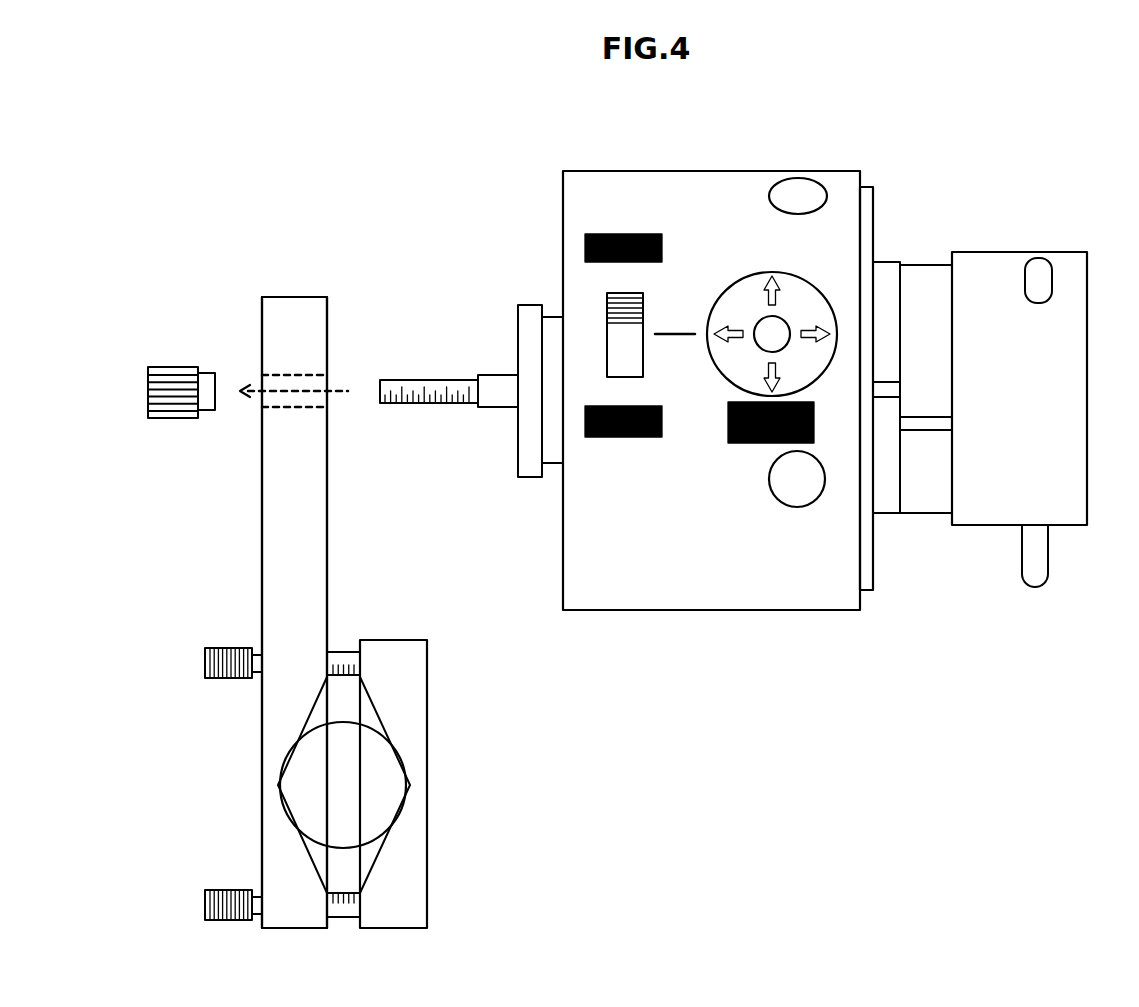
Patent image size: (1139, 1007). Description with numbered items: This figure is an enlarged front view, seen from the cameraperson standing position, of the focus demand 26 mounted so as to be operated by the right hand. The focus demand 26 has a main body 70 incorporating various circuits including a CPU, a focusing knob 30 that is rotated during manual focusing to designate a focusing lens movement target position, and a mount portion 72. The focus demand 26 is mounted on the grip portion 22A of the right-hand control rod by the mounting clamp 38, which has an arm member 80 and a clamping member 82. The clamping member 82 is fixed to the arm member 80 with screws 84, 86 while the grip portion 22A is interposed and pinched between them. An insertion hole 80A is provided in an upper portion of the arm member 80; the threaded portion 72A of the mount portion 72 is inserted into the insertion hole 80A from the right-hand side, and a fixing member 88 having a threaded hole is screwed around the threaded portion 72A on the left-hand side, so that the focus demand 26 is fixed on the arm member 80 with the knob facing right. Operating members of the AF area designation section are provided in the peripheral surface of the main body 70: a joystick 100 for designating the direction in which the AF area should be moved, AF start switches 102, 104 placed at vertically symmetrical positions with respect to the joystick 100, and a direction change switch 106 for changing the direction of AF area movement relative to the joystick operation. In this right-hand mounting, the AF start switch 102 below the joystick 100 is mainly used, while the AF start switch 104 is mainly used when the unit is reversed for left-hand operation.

The grip portion 22A is at (300, 785).
The focus demand 26 is at (836, 680).
The focusing knob 30 is at (1072, 382).
The mounting clamp 38 is at (322, 284).
The main body 70 is at (712, 171).
The mount portion 72 is at (486, 302).
The threaded portion 72A is at (423, 379).
The arm member 80 is at (273, 545).
The insertion hole 80A is at (282, 396).
The clamping member 82 is at (415, 686).
The screw 84 is at (205, 905).
The screw 86 is at (205, 661).
The fixing member 88 is at (173, 367).
The joystick 100 is at (764, 329).
The AF start switch 102 is at (769, 481).
The AF start switch 104 is at (769, 196).
The direction change switch 106 is at (586, 327).